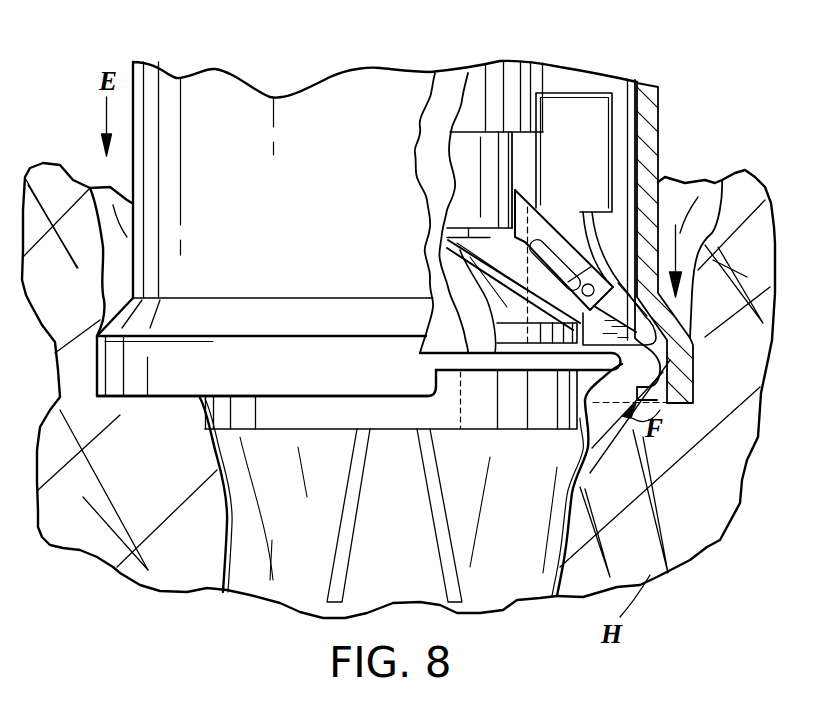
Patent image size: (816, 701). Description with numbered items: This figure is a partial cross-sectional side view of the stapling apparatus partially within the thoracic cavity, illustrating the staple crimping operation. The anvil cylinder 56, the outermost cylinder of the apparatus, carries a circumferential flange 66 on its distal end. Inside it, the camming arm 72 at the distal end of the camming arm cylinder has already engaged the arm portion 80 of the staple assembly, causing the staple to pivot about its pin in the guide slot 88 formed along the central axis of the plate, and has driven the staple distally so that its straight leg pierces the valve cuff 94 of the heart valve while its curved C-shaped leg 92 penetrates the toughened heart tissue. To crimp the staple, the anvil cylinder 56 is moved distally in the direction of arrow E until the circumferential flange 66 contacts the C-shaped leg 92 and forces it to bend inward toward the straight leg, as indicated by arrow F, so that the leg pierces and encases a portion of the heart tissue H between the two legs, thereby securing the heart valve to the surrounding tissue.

The anvil cylinder 56 is at (648, 128).
The circumferential flange 66 is at (745, 462).
The camming arm 72 is at (547, 250).
The arm portion 80 is at (587, 255).
The guide slot 88 is at (583, 178).
The C-shaped leg 92 is at (665, 410).
The valve cuff 94 is at (467, 358).